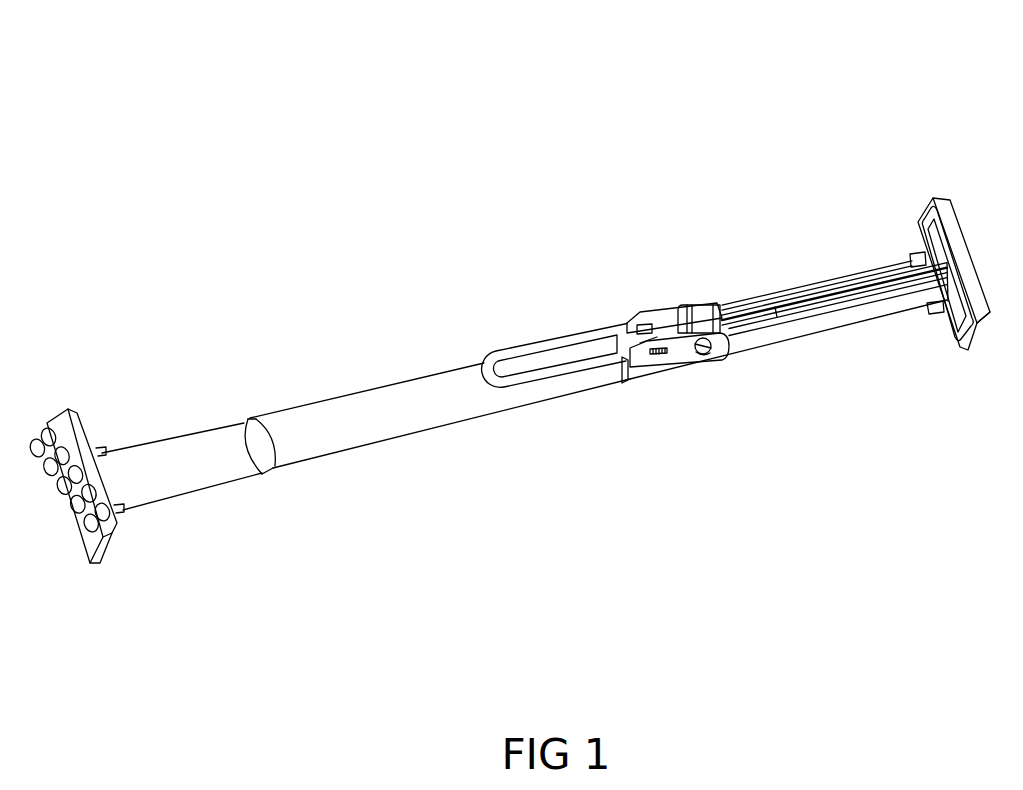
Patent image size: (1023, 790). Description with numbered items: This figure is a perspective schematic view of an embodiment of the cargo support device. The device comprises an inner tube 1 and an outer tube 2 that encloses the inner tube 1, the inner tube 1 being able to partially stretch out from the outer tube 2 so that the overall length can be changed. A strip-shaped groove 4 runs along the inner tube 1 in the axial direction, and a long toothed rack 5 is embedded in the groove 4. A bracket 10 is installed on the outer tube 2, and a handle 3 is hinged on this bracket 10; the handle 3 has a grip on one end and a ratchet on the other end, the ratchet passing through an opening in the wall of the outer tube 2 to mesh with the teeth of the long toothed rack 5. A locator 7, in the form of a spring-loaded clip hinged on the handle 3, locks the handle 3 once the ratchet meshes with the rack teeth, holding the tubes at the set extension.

The inner tube 1 is at (848, 317).
The outer tube 2 is at (343, 410).
The handle 3 is at (542, 355).
The strip-shaped groove 4 is at (800, 303).
The long toothed rack 5 is at (735, 320).
The locator 7 is at (640, 328).
The bracket 10 is at (683, 357).